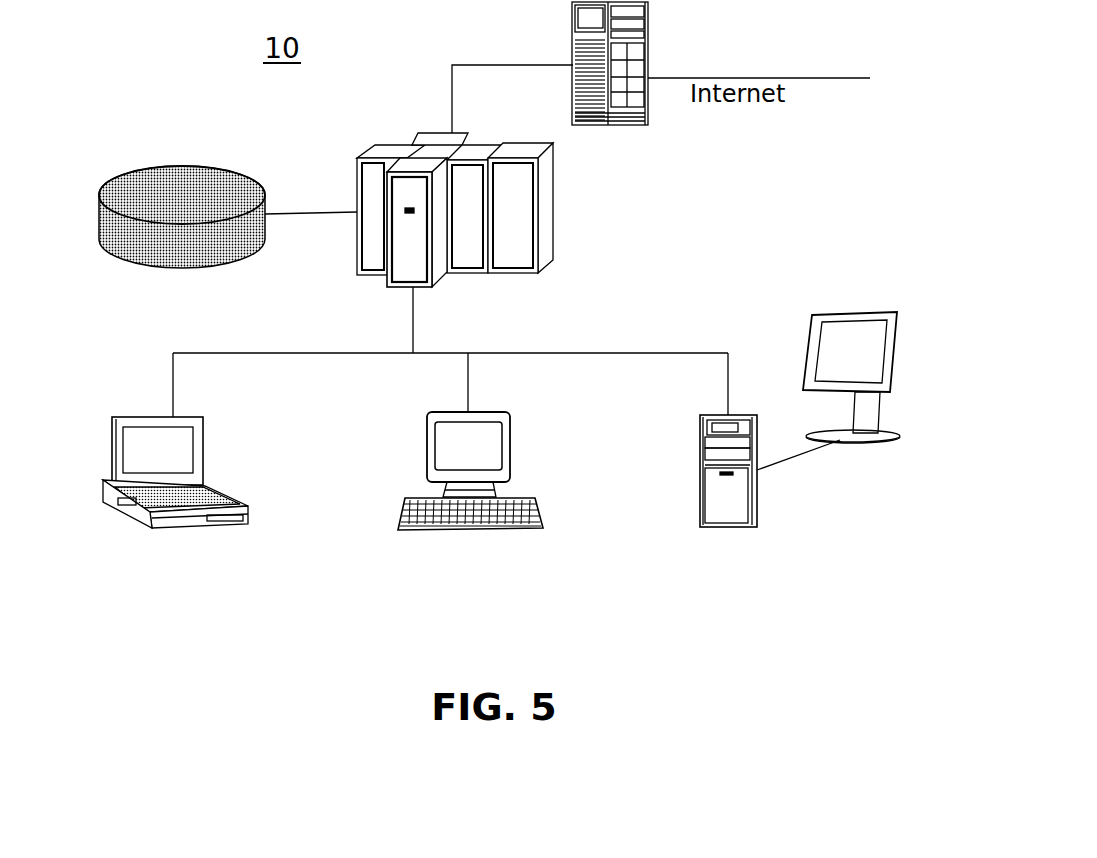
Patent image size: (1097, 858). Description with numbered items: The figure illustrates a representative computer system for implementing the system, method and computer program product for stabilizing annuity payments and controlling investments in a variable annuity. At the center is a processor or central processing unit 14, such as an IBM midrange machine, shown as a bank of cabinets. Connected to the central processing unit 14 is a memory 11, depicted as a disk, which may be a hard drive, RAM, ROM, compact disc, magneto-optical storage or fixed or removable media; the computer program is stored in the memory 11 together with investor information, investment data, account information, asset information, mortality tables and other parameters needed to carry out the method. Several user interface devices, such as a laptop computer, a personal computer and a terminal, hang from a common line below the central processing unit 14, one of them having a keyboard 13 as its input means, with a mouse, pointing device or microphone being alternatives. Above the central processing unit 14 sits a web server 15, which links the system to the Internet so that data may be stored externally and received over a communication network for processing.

The memory 11 is at (135, 172).
The keyboard 13 is at (398, 510).
The central processing unit 14 is at (553, 209).
The web server 15 is at (573, 14).